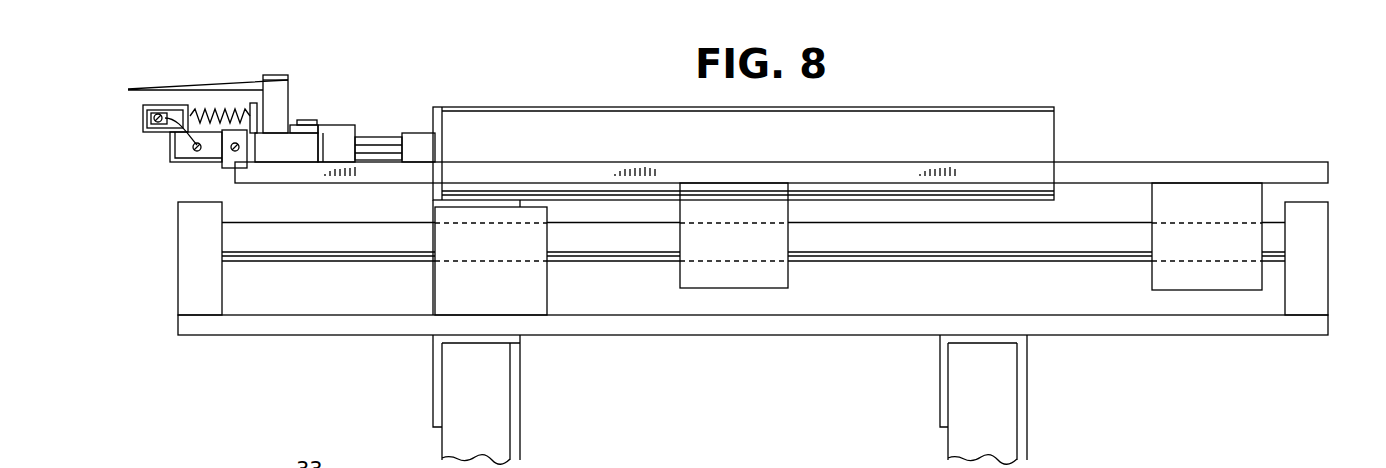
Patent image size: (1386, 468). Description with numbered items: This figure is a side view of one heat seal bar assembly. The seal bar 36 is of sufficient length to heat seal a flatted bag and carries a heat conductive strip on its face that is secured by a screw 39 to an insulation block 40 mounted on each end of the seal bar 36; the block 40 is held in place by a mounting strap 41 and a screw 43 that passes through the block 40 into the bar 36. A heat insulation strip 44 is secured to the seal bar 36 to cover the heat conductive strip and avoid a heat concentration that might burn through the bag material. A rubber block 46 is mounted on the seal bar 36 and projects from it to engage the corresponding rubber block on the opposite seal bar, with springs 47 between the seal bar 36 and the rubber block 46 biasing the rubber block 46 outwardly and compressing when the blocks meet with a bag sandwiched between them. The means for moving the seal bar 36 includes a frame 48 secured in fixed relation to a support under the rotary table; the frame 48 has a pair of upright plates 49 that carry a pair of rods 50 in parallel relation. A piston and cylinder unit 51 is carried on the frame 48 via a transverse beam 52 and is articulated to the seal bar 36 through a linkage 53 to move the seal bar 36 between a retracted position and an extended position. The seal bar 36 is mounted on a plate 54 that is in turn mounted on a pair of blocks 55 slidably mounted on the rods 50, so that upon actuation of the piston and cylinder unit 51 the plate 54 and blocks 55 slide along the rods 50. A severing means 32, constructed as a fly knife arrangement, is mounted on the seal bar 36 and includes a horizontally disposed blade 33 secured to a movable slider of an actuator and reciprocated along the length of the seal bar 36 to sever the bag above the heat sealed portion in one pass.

The severing means 32 is at (287, 98).
The blade 33 is at (247, 85).
The seal bar 36 is at (315, 137).
The screw 39 is at (190, 152).
The insulation block 40 is at (207, 160).
The mounting strap 41 is at (243, 167).
The screw 43 is at (250, 173).
The heat insulation strip 44 is at (171, 163).
The rubber block 46 is at (160, 107).
The springs 47 is at (205, 108).
The frame 48 is at (272, 343).
The upright plates 49 is at (187, 303).
The rods 50 is at (367, 250).
The piston and cylinder unit 51 is at (880, 118).
The transverse beam 52 is at (542, 302).
The linkage 53 is at (360, 128).
The plate 54 is at (392, 178).
The blocks 55 is at (780, 283).